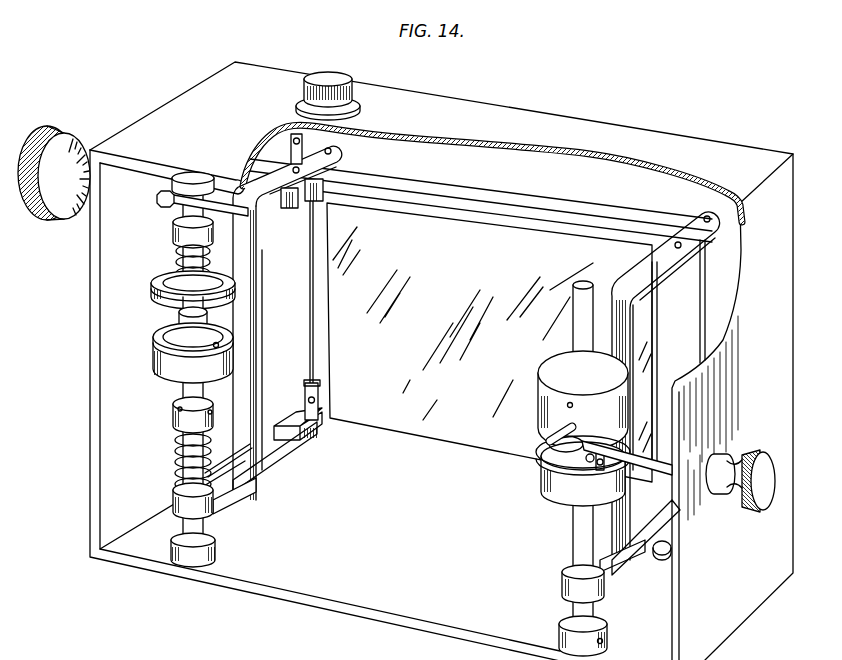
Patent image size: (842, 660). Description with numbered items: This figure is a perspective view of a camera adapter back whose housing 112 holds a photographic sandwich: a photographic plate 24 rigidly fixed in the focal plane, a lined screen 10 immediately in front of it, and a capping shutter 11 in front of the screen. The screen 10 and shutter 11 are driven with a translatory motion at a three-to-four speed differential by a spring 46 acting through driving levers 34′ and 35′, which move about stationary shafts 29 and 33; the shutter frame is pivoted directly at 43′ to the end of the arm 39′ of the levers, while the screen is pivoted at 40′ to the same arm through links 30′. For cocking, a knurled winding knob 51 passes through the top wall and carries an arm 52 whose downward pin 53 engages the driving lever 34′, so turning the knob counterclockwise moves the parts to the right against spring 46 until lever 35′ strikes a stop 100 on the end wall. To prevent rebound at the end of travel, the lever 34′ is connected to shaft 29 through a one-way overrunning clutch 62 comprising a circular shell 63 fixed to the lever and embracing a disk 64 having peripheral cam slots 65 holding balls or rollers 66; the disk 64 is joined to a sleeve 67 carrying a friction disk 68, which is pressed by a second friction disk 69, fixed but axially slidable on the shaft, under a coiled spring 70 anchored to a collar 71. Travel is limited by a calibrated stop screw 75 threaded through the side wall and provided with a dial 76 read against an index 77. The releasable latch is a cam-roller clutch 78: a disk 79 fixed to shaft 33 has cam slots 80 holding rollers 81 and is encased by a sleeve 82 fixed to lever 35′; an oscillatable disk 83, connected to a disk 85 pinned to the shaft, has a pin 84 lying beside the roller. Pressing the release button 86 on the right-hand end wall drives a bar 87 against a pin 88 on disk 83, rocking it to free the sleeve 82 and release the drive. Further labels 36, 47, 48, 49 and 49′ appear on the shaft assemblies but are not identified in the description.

The lined screen 10 is at (312, 253).
The capping shutter 11 is at (560, 228).
The photographic plate 24 is at (489, 342).
The stationary shaft 29 is at (183, 392).
The links 30′ is at (296, 208).
The stationary shaft 33 is at (576, 552).
The driving lever 34′ is at (233, 312).
The driving lever 35′ is at (627, 511).
The base bracket 36 is at (223, 510).
The arm 39′ is at (253, 217).
The pivot 40′ is at (305, 408).
The pivot 43′ is at (336, 151).
The spring 46 is at (175, 458).
The collar 47 is at (175, 425).
The collar set screw 48 is at (172, 406).
The pin 49 is at (208, 415).
The pin 49′ is at (242, 447).
The knurled knob 51 is at (328, 76).
The arm 52 is at (293, 128).
The pin 53 is at (291, 150).
The one-way overrunning clutch 62 is at (156, 343).
The circular shell 63 is at (155, 368).
The stationary disk 64 is at (178, 333).
The cam slots 65 is at (212, 346).
The balls or rollers 66 is at (234, 352).
The sleeve 67 is at (192, 317).
The friction disk 68 is at (152, 295).
The friction disk 69 is at (160, 276).
The coiled spring 70 is at (176, 255).
The collar 71 is at (172, 232).
The calibrated screw 75 is at (158, 200).
The dial 76 is at (72, 218).
The index 77 is at (84, 148).
The one-way overrunning clutch 78 is at (580, 470).
The disk 79 is at (557, 458).
The cam slot 80 is at (568, 464).
The ball or roller 81 is at (592, 466).
The sleeve 82 is at (548, 447).
The oscillatable disk 83 is at (550, 438).
The pin 84 is at (600, 472).
The disk 85 is at (538, 375).
The release button 86 is at (765, 510).
The bar 87 is at (667, 468).
The pin 88 is at (560, 432).
The stop 100 is at (652, 560).
The housing 112 is at (753, 157).